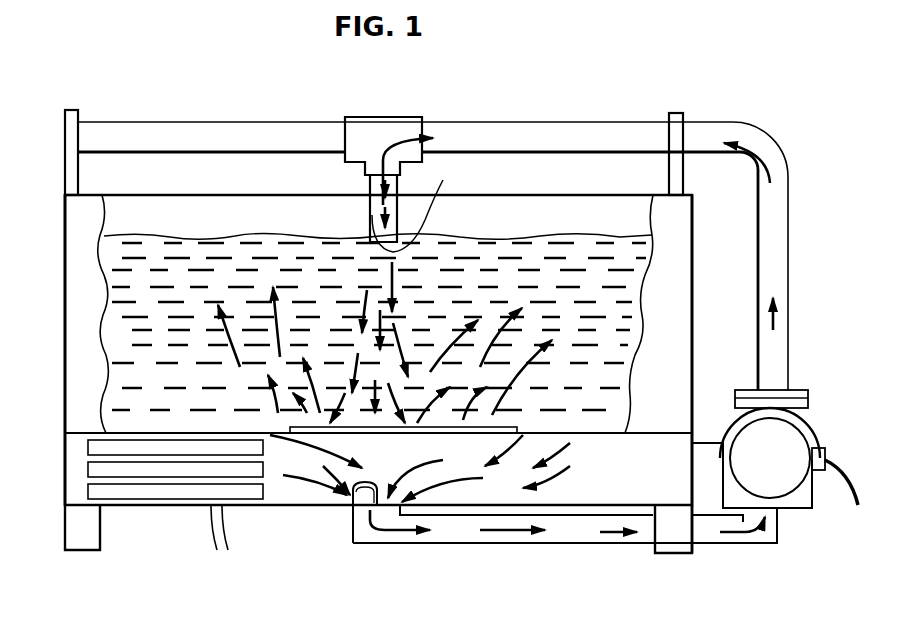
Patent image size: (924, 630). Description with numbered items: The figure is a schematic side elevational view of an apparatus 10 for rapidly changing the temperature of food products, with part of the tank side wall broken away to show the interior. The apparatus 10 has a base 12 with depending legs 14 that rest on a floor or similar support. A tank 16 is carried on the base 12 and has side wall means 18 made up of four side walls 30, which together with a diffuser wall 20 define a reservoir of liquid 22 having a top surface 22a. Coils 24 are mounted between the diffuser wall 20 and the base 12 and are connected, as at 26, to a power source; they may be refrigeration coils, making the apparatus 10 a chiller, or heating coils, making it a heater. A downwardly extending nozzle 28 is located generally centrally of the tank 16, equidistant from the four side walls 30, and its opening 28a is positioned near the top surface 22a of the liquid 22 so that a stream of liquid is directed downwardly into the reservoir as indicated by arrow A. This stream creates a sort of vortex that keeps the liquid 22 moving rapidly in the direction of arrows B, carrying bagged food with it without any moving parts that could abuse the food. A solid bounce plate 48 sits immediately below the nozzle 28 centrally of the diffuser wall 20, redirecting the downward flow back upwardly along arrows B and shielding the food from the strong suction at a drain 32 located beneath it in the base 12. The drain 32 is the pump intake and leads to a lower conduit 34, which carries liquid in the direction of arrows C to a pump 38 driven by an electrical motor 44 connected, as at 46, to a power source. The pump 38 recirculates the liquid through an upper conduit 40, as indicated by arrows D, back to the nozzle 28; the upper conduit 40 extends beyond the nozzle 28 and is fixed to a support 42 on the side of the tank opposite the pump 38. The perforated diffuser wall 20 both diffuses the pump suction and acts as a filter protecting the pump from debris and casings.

The apparatus 10 is at (606, 82).
The base 12 is at (290, 507).
The legs 14 is at (84, 535).
The tank 16 is at (130, 192).
The side wall means 18 is at (88, 326).
The diffuser wall 20 is at (607, 507).
The liquid 22 is at (170, 258).
The top surface of liquid 22a is at (403, 337).
The coils 24 is at (140, 447).
The power connection 26 is at (210, 532).
The nozzle 28 is at (368, 213).
The nozzle opening 28a is at (412, 262).
The side walls 30 is at (68, 365).
The drain 32 is at (370, 483).
The lower conduit 34 is at (405, 545).
The pump 38 is at (808, 512).
The upper conduit 40 is at (773, 140).
The support 42 is at (73, 150).
The electrical motor 44 is at (768, 433).
The power connection 46 is at (858, 468).
The bounce plate 48 is at (537, 415).
The downward liquid stream arrow A is at (443, 180).
The liquid circulation arrows B is at (350, 357).
The conduit flow arrows C is at (590, 535).
The recirculation flow arrows D is at (406, 138).